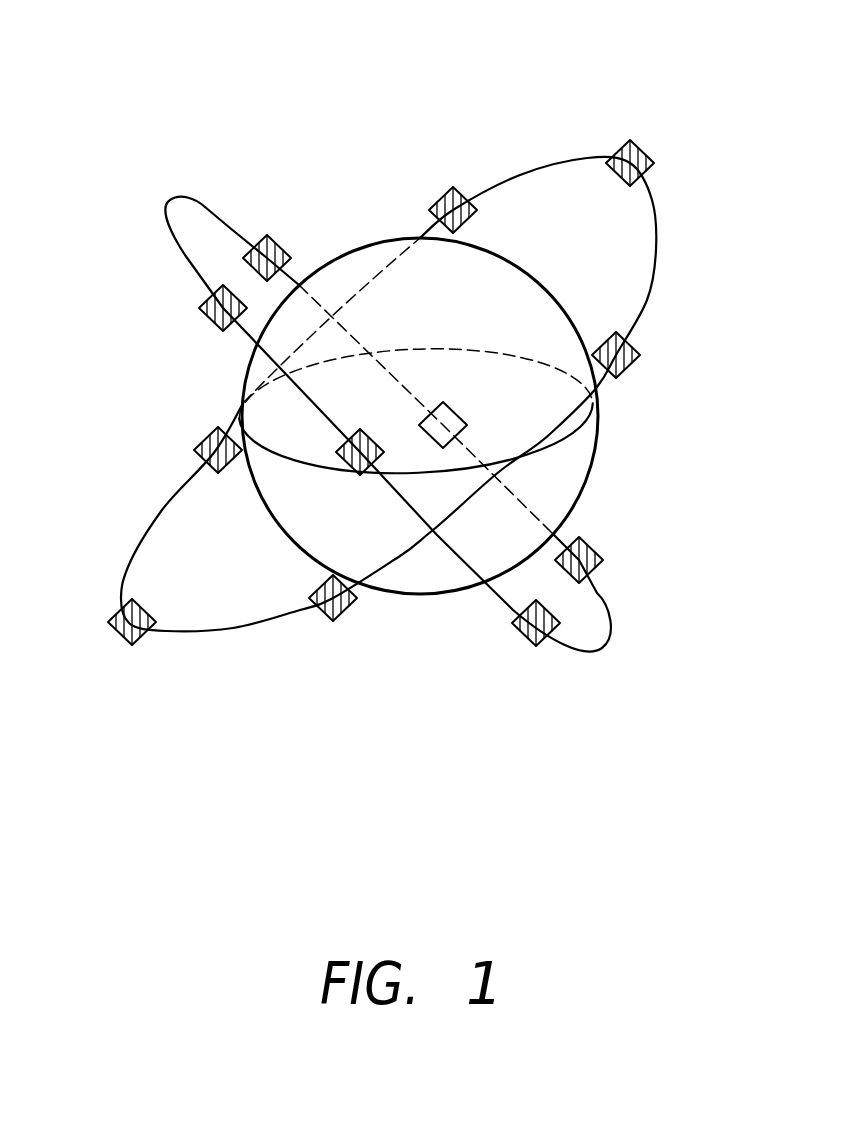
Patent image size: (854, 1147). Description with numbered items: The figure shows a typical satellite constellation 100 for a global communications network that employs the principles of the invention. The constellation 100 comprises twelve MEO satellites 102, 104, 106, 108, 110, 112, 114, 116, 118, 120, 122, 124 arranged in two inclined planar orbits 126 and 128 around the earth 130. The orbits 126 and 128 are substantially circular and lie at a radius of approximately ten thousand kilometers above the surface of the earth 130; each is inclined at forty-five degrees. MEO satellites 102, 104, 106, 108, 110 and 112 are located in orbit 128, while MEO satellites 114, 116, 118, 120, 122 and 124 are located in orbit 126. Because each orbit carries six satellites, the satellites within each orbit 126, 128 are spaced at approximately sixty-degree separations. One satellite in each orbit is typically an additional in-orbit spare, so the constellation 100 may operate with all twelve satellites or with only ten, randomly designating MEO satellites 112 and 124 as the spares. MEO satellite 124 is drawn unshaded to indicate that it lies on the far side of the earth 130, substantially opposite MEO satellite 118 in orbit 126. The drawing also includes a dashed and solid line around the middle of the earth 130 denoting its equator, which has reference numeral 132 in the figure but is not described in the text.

The constellation 100 is at (298, 95).
The MEO satellite 102 is at (640, 147).
The MEO satellite 104 is at (447, 195).
The MEO satellite 106 is at (210, 433).
The MEO satellite 108 is at (124, 632).
The MEO satellite 110 is at (343, 618).
The MEO satellite 112 is at (632, 364).
The MEO satellite 114 is at (280, 245).
The MEO satellite 116 is at (200, 312).
The MEO satellite 118 is at (372, 447).
The MEO satellite 120 is at (525, 633).
The MEO satellite 122 is at (602, 560).
The MEO satellite 124 is at (448, 403).
The orbit 126 is at (537, 163).
The orbit 128 is at (153, 513).
The earth 130 is at (580, 490).
The equator 132 is at (570, 438).